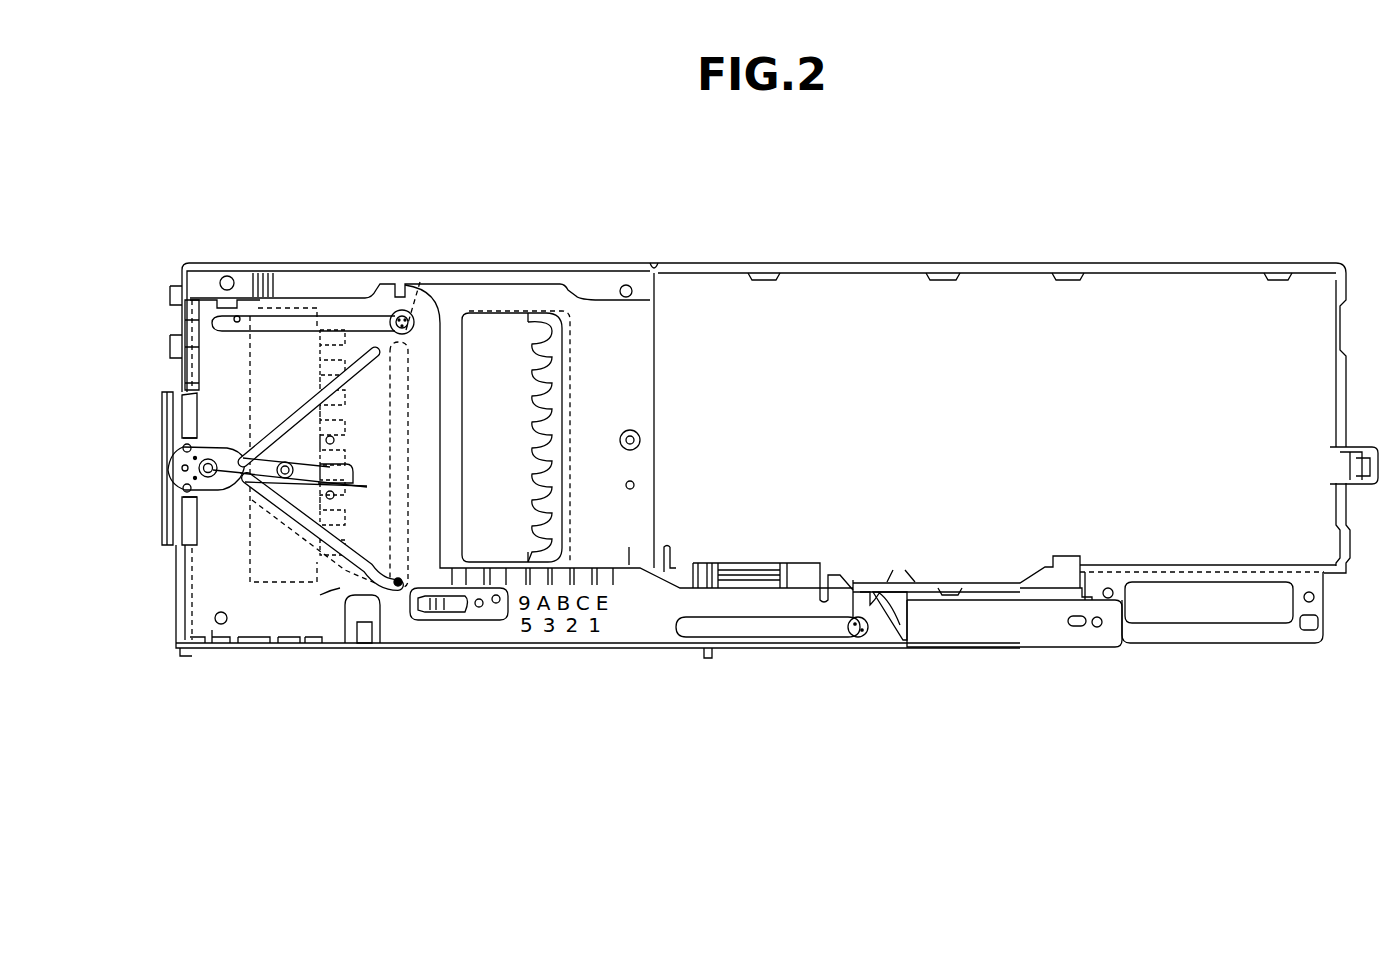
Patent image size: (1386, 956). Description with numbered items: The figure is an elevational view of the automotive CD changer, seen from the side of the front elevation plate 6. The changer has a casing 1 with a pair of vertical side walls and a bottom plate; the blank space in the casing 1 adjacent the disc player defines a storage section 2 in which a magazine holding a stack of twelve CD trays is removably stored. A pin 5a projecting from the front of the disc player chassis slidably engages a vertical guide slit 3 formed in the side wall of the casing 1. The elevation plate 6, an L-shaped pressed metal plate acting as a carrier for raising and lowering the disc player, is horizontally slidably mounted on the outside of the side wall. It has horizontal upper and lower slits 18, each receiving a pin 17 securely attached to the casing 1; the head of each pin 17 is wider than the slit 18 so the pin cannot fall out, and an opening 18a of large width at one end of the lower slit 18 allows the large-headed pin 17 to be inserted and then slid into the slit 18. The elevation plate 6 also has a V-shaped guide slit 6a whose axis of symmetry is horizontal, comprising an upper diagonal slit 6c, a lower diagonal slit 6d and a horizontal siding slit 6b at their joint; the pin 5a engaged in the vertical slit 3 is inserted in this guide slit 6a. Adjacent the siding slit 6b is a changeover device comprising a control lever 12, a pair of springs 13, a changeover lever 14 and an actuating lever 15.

The casing 1 is at (594, 310).
The storage section 2 is at (1140, 310).
The vertical guide slit 3 is at (402, 383).
The pin 5a is at (398, 590).
The elevation plate 6 is at (325, 605).
The V-shaped guide slit 6a is at (265, 548).
The horizontal siding slit 6b is at (190, 445).
The upper diagonal slit 6c is at (300, 425).
The lower diagonal slit 6d is at (330, 590).
The control lever 12 is at (176, 480).
The springs 13 is at (185, 375).
The changeover lever 14 is at (298, 455).
The actuating lever 15 is at (330, 470).
The pin 17 is at (858, 640).
The slit 18 is at (752, 638).
The opening 18a is at (900, 632).